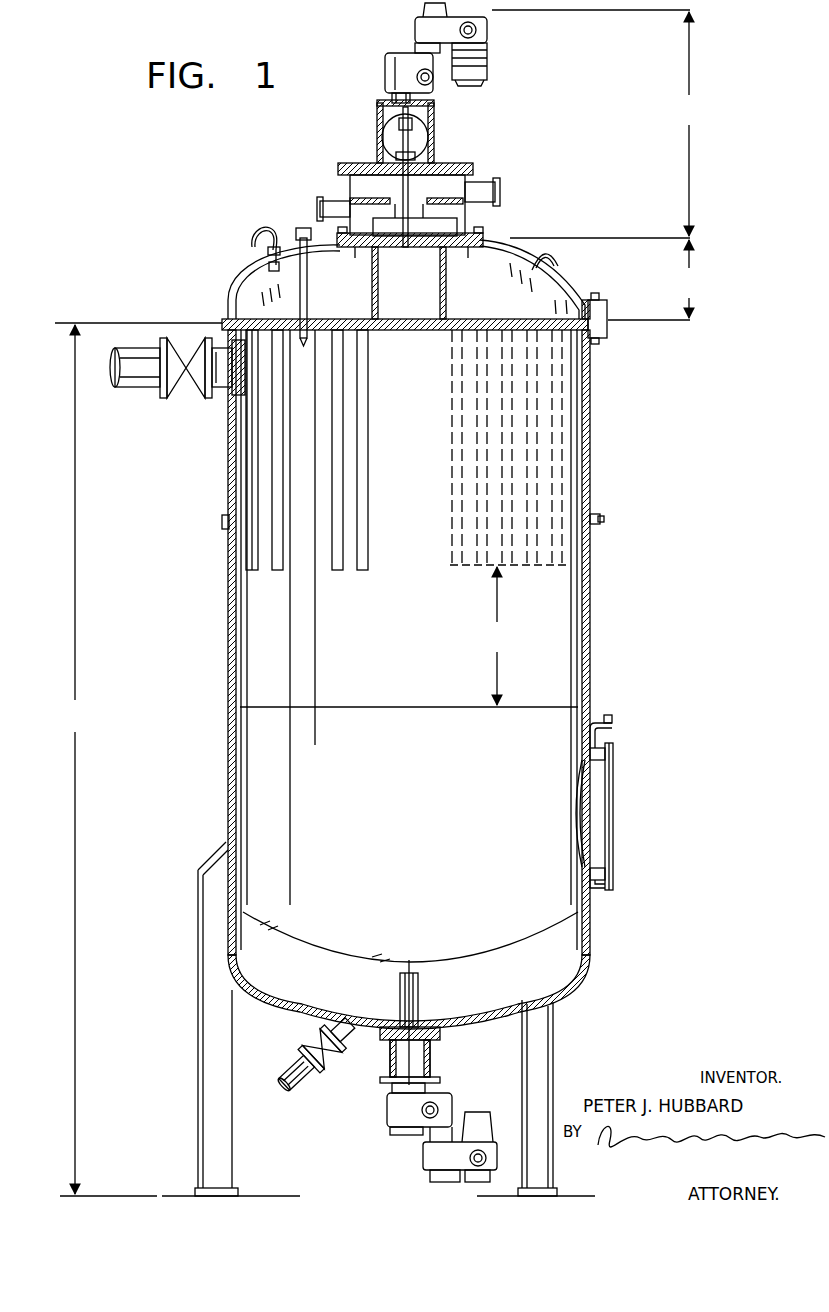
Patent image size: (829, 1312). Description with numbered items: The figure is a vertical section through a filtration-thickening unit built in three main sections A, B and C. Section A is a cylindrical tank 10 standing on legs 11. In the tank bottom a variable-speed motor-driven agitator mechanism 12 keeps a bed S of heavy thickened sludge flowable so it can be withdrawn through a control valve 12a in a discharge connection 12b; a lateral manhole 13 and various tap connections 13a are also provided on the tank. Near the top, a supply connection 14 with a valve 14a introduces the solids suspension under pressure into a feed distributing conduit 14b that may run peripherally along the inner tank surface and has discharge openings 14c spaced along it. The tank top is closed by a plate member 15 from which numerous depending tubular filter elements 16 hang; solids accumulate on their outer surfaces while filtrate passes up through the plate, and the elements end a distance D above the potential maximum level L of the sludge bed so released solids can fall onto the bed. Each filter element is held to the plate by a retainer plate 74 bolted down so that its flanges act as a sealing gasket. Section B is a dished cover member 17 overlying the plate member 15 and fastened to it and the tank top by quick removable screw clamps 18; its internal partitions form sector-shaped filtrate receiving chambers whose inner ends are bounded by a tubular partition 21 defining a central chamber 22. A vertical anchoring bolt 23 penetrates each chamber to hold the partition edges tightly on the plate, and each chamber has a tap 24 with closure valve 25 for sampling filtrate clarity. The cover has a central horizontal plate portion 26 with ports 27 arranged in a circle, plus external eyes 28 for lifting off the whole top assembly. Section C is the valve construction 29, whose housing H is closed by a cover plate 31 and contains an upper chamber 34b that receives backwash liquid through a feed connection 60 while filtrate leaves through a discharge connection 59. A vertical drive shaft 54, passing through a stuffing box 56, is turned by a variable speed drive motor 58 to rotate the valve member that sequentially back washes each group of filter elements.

The cylindrical tank 10 is at (210, 630).
The legs 11 is at (199, 946).
The variable-speed motor-driven agitator mechanism 12 is at (375, 1080).
The control valve 12a is at (322, 1055).
The discharge connection 12b is at (304, 1088).
The lateral manhole 13 is at (613, 818).
The tap connections 13a is at (224, 528).
The supply connection 14 is at (140, 378).
The valve 14a is at (190, 380).
The feed distributing conduit 14b is at (240, 377).
The discharge openings 14c is at (224, 378).
The plate member 15 is at (225, 320).
The tubular filter elements 16 is at (368, 495).
The dished cover member 17 is at (575, 284).
The screw clamps 18 is at (607, 306).
The tubular partition 21 is at (441, 286).
The central chamber 22 is at (396, 309).
The vertical anchoring bolt 23 is at (309, 303).
The tap 24 is at (252, 244).
The closure valve 25 is at (266, 254).
The central horizontal plate portion 26 is at (460, 250).
The ports 27 is at (357, 250).
The external eyes 28 is at (558, 264).
The valve construction 29 is at (478, 159).
The cover plate 31 is at (451, 164).
The upper chamber 34b is at (418, 197).
The vertical drive shaft 54 is at (400, 144).
The stuffing box 56 is at (395, 160).
The variable speed drive motor 58 is at (385, 72).
The discharge connection 59 is at (318, 209).
The feed connection 60 is at (500, 191).
The retainer plate 74 is at (257, 325).
The section A is at (325, 759).
The section B is at (652, 280).
The section C is at (594, 124).
The distance D is at (497, 636).
The valve housing H is at (338, 180).
The potential maximum level L is at (384, 707).
The bed of thickened sludge S is at (410, 781).